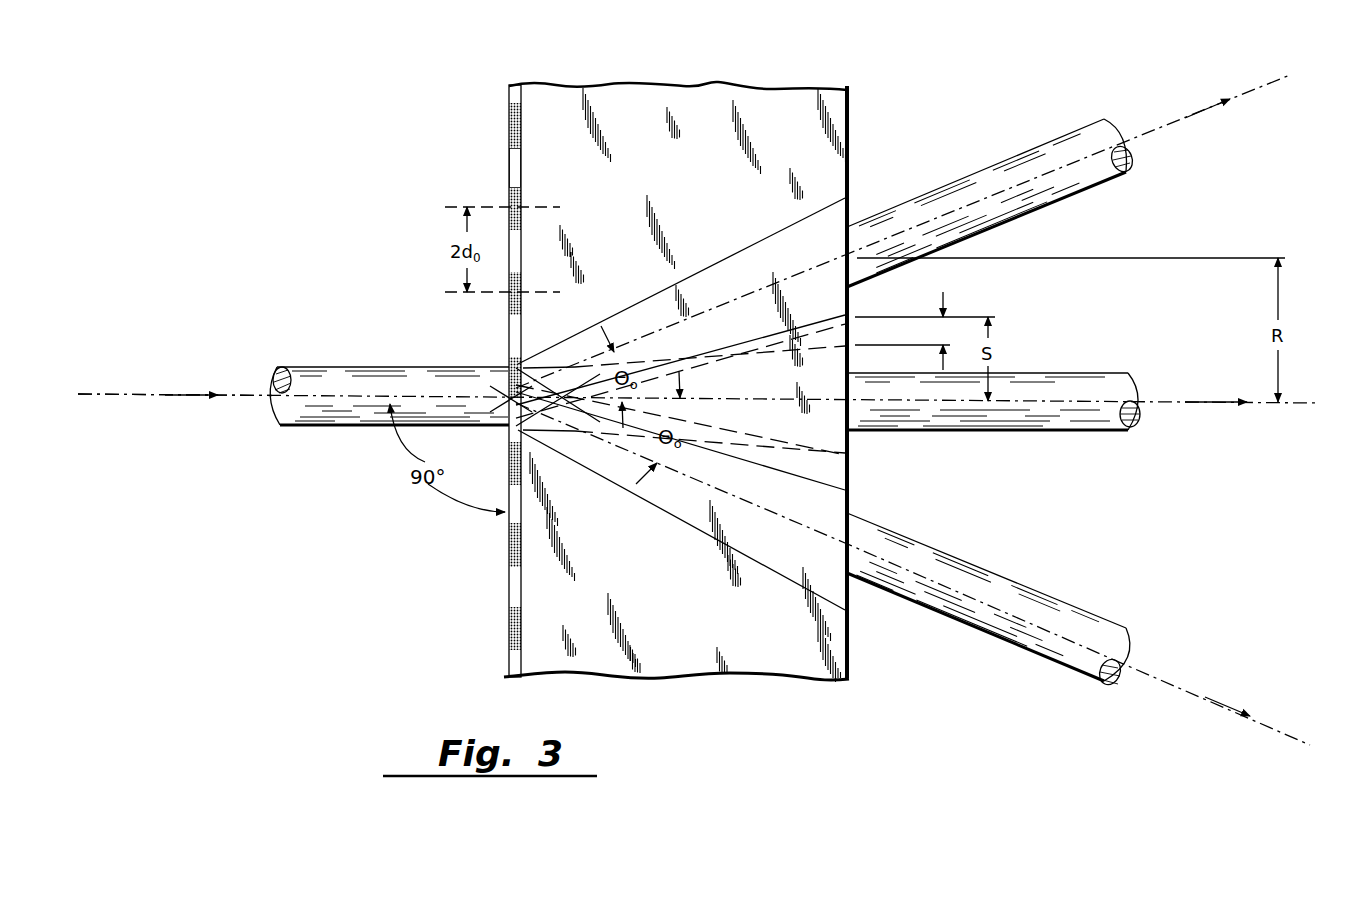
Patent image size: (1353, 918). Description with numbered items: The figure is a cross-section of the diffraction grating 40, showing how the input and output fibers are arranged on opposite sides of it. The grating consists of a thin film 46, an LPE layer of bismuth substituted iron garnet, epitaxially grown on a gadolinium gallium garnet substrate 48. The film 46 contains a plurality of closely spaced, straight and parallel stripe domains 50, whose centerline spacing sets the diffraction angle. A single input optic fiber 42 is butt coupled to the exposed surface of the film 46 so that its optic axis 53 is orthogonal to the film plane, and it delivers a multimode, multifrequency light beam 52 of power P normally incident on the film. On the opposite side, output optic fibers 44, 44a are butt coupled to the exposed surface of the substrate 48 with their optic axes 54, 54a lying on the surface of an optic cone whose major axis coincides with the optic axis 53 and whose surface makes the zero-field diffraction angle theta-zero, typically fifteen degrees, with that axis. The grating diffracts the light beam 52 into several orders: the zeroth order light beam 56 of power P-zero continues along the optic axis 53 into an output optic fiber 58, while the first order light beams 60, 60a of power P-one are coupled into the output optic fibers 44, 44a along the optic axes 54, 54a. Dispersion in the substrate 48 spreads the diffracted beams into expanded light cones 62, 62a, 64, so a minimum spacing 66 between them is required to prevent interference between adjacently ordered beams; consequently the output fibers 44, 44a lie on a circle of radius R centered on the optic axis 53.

The diffraction grating 40 is at (651, 396).
The input optic fiber 42 is at (378, 364).
The output optic fiber 44 is at (1042, 146).
The output optic fiber 44a is at (1028, 585).
The film 46 is at (506, 381).
The substrate 48 is at (713, 87).
The stripe domains 50 is at (519, 158).
The light beam 52 is at (185, 398).
The optic axis 53 is at (118, 393).
The optic axis 54 is at (1268, 88).
The optic axis 54a is at (1293, 738).
The 0'th order light beam 56 is at (1222, 400).
The output optic fiber 58 is at (1062, 373).
The 1'st order light beam 60 is at (1187, 118).
The 1'st order light beam 60a is at (1218, 708).
The expanded light cone 62 is at (778, 232).
The expanded light cone 62a is at (684, 522).
The expanded light cone 64 is at (812, 458).
The minimum spacing 66 is at (925, 331).